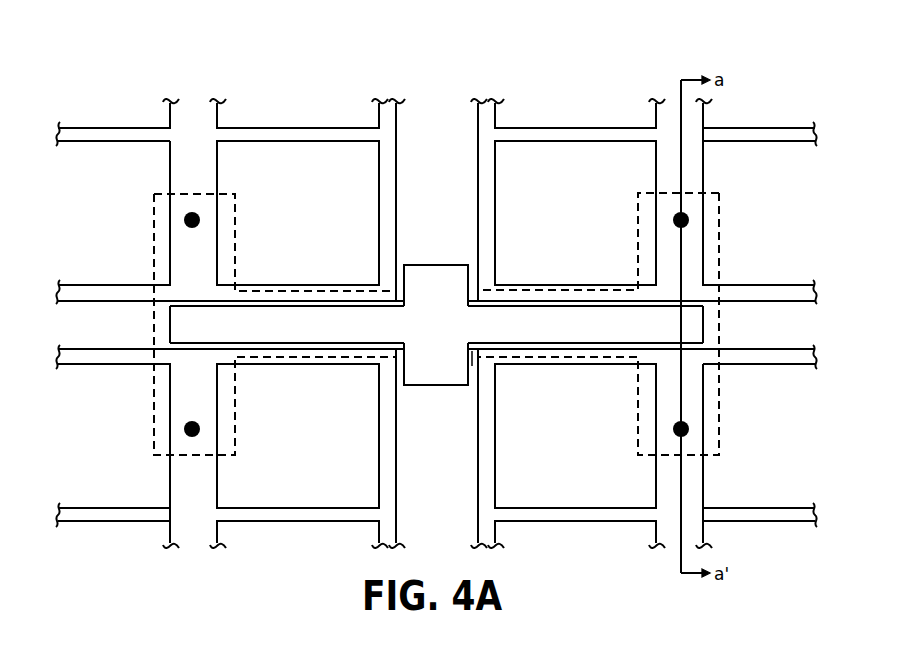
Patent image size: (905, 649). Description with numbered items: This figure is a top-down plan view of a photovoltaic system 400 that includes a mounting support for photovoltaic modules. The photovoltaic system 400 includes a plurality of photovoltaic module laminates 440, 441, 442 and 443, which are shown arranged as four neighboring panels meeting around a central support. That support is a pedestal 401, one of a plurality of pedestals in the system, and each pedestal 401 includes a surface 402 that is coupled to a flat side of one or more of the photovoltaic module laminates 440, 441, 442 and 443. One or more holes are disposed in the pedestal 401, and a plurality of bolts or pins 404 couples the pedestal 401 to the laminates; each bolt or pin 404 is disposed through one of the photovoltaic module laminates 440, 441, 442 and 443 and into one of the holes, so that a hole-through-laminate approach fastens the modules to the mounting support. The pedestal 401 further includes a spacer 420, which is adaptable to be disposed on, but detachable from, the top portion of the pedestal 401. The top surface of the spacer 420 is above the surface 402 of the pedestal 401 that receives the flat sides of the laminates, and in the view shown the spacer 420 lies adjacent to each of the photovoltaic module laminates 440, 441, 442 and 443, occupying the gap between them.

The photovoltaic system 400 is at (496, 51).
The pedestal 401 is at (707, 226).
The surface 402 is at (472, 366).
The bolt or pin 404 is at (689, 428).
The spacer 420 is at (454, 329).
The photovoltaic module laminate 440 is at (397, 172).
The photovoltaic module laminate 441 is at (477, 223).
The photovoltaic module laminate 442 is at (423, 453).
The photovoltaic module laminate 443 is at (478, 485).